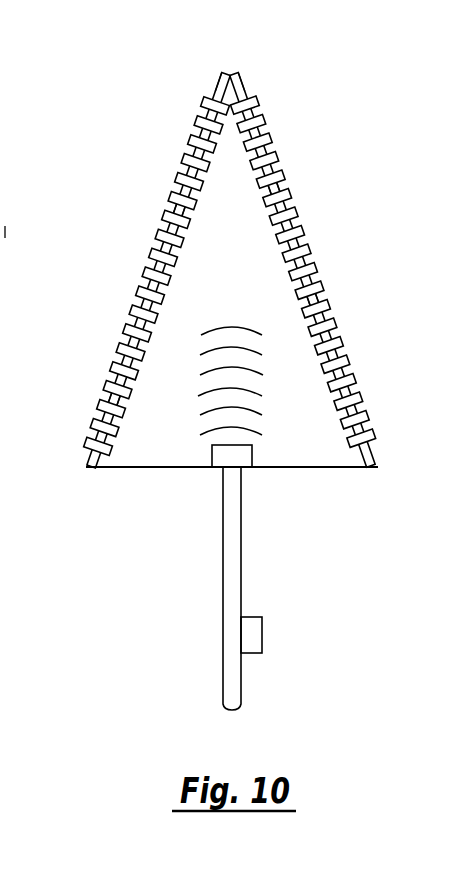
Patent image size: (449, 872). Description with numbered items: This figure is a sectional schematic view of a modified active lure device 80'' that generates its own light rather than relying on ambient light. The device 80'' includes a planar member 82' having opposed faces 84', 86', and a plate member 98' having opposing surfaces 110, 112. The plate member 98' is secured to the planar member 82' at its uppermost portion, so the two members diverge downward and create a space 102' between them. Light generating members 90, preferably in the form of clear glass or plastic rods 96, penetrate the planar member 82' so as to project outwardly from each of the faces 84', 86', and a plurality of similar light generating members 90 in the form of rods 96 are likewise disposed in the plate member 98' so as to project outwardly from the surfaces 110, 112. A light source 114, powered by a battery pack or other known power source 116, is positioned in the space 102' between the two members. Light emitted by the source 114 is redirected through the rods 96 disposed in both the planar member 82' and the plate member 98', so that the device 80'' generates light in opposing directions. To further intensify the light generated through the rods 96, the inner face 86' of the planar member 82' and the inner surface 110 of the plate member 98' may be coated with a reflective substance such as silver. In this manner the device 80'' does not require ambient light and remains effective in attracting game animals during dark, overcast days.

The active lure device 80'' is at (317, 270).
The planar member 82' is at (283, 46).
The face of planar member 84' is at (327, 167).
The inner face of planar member 86' is at (334, 229).
The light generating members 90 is at (155, 211).
The rods 96 is at (178, 177).
The plate member 98' is at (154, 270).
The space 102' is at (158, 349).
The inner surface of plate member 110 is at (115, 422).
The outer surface of plate member 112 is at (110, 393).
The light source 114 is at (242, 457).
The power source 116 is at (253, 634).